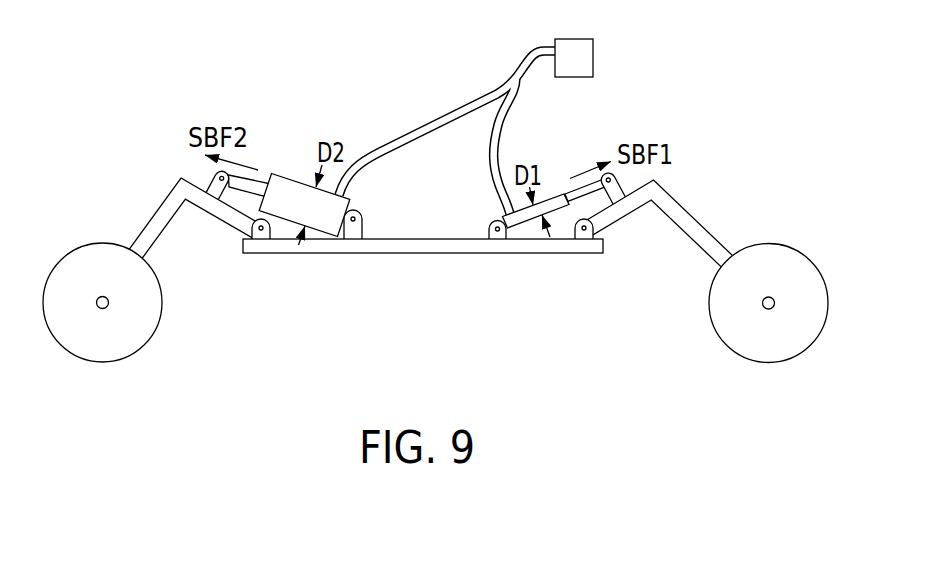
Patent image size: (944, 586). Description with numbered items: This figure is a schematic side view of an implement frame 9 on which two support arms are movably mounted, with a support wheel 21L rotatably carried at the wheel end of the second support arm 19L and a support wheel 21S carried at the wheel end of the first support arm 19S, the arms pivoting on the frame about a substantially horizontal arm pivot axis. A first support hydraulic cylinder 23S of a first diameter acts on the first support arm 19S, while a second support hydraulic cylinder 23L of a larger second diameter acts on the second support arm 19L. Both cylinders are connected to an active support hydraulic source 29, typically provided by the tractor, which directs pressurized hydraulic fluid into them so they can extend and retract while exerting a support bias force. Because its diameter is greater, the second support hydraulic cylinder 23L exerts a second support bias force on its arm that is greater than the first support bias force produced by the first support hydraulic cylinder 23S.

The implement frame 9 is at (424, 253).
The second support arm 19L is at (157, 208).
The first support arm 19S is at (690, 208).
The support wheel 21L is at (163, 317).
The support wheel 21S is at (772, 243).
The second support hydraulic cylinder 23L is at (296, 181).
The first support hydraulic cylinder 23S is at (548, 200).
The active support hydraulic source 29 is at (593, 57).